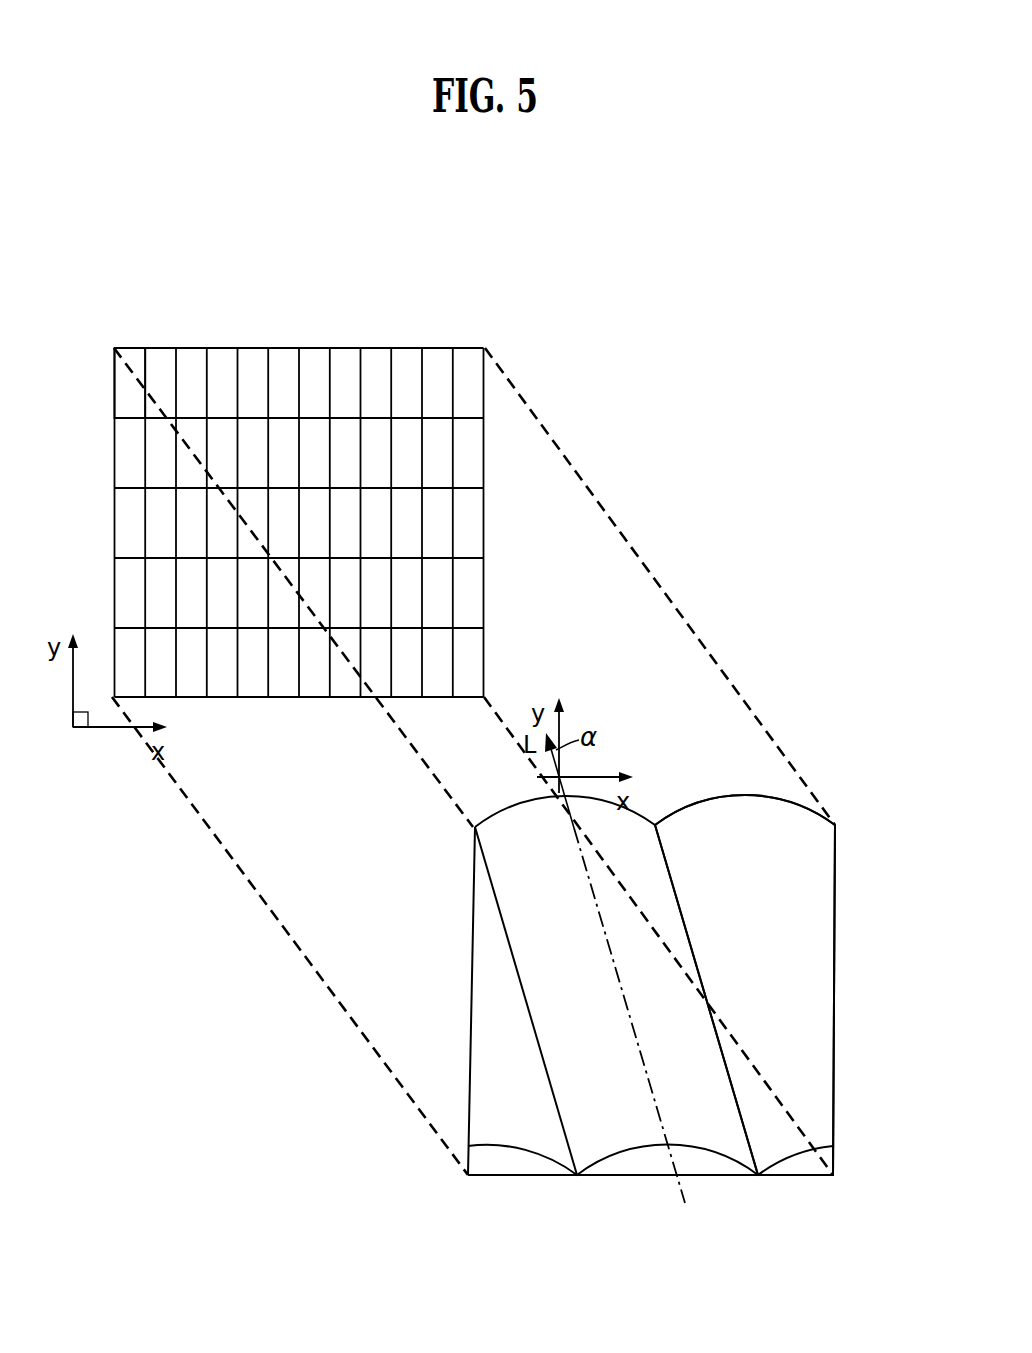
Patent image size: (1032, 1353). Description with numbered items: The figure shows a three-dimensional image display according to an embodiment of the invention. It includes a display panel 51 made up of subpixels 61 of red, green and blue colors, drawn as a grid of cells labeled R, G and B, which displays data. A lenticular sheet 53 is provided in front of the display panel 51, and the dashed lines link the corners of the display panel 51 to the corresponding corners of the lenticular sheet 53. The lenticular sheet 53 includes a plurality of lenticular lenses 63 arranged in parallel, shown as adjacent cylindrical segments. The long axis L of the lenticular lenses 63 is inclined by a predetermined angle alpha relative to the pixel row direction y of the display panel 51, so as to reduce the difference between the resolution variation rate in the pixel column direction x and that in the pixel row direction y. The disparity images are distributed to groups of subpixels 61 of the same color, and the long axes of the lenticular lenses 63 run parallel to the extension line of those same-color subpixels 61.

The display panel 51 is at (498, 341).
The lenticular sheet 53 is at (848, 811).
The subpixels 61 is at (118, 397).
The lenticular lenses 63 is at (832, 870).